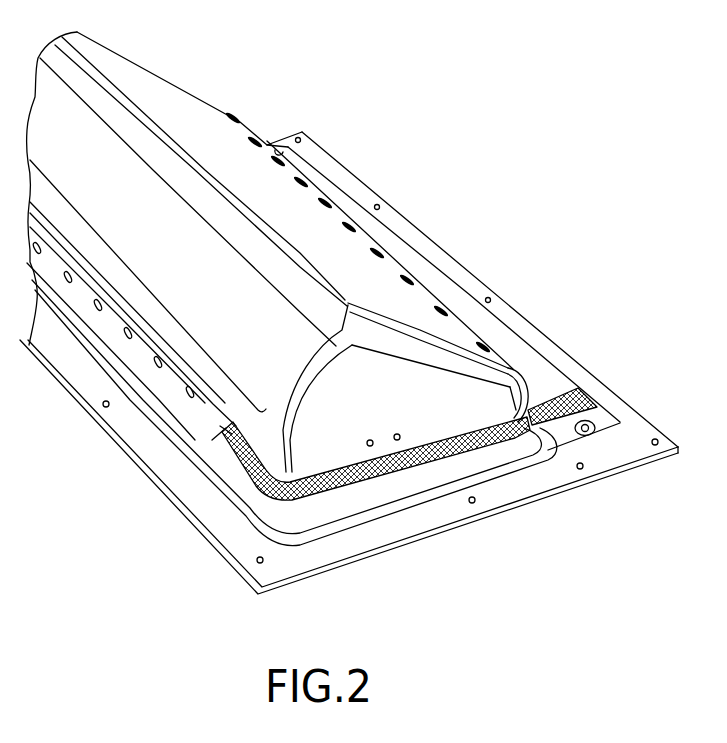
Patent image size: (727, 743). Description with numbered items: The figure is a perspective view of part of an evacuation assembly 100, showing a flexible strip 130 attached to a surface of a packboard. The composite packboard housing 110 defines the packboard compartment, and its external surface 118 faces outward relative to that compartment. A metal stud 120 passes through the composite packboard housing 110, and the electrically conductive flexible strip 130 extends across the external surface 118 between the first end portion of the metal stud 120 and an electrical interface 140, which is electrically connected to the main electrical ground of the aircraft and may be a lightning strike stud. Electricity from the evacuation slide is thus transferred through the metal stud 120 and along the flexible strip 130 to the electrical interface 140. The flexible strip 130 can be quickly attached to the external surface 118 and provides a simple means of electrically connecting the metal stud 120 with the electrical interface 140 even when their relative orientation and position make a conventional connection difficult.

The evacuation assembly 100 is at (555, 176).
The composite packboard housing 110 is at (291, 214).
The external surface 118 is at (449, 428).
The metal stud 120 is at (208, 433).
The flexible strip 130 is at (366, 480).
The electrical interface 140 is at (573, 403).